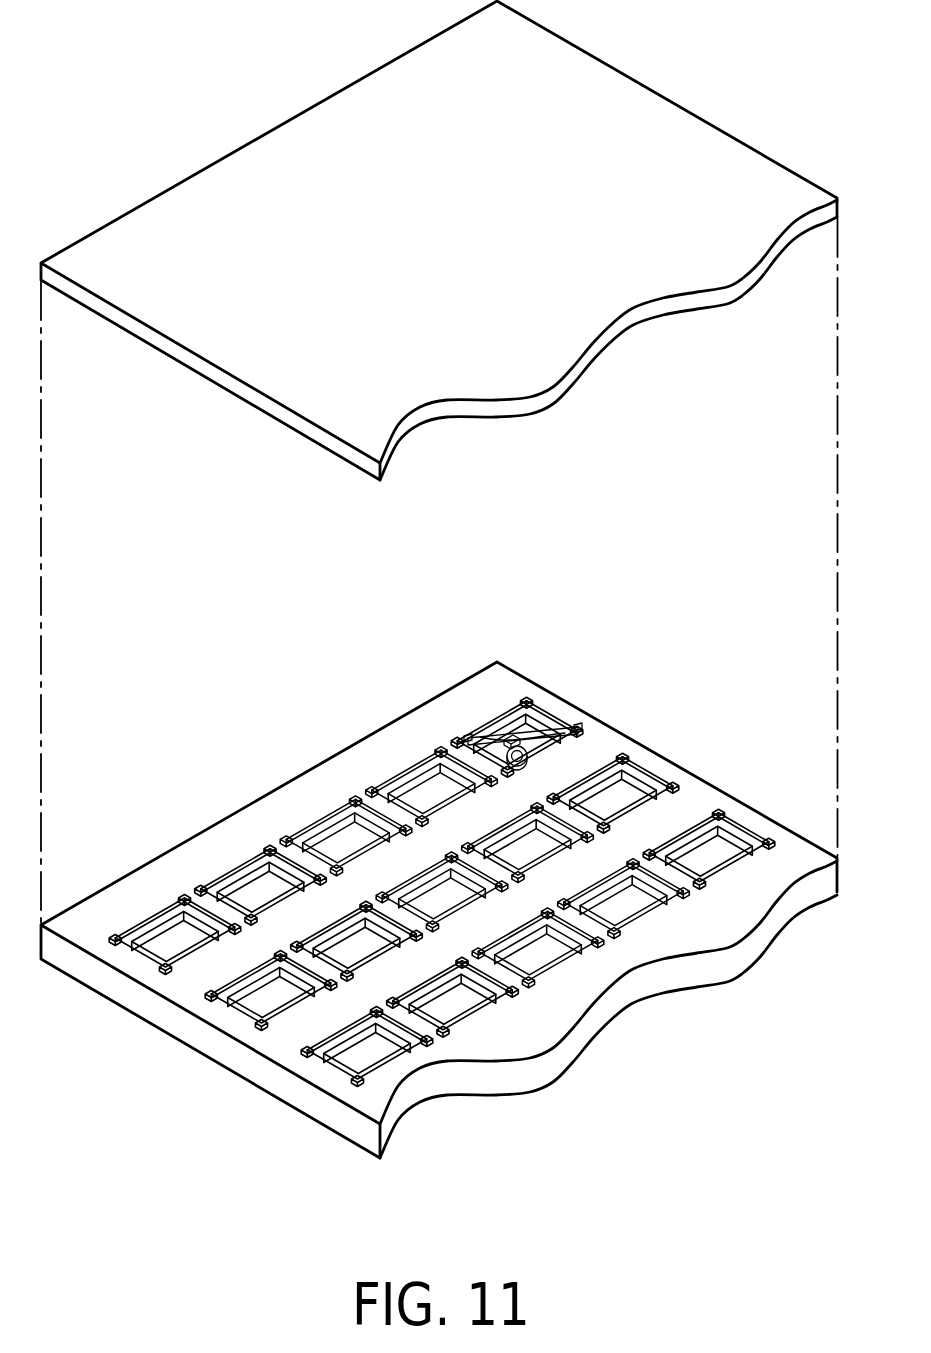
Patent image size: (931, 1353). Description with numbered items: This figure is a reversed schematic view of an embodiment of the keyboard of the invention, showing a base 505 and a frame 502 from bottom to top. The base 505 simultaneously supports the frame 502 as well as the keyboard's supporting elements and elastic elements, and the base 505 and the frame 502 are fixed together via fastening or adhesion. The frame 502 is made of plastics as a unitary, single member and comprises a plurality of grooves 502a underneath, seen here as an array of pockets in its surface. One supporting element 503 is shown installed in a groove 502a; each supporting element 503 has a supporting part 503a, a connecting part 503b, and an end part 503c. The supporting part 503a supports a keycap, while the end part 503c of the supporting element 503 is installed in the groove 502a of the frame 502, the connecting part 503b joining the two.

The base 505 is at (616, 104).
The frame 502 is at (698, 797).
The groove 502a is at (526, 699).
The supporting element 503 is at (356, 671).
The supporting part 503a is at (505, 708).
The connecting part 503b is at (475, 732).
The end part 503c is at (523, 705).